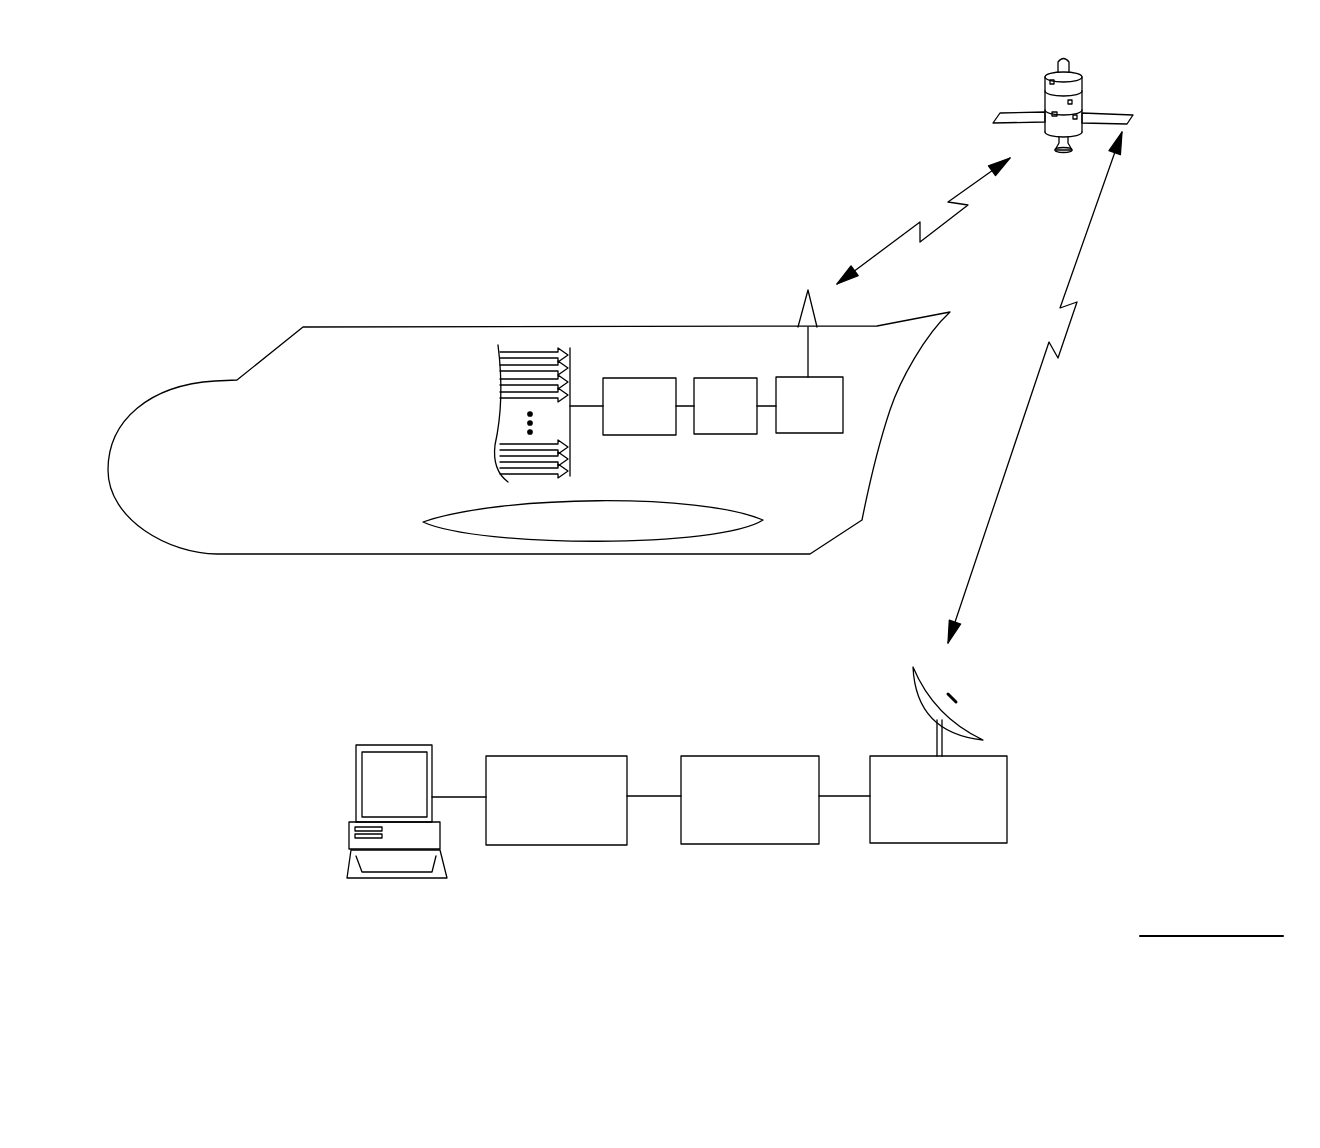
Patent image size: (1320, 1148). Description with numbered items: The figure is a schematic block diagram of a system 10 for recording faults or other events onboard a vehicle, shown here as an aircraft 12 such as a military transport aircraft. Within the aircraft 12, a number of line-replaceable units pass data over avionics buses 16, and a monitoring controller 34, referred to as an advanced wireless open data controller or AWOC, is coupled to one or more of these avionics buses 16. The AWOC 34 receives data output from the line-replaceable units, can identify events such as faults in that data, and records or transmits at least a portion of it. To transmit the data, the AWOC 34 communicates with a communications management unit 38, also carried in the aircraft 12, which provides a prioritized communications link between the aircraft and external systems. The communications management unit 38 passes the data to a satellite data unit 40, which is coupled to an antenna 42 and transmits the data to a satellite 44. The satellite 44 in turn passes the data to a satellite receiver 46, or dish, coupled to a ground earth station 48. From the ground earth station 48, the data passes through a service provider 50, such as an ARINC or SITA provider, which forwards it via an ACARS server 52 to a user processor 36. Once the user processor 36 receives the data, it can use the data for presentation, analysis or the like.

The system 10 is at (530, 223).
The aircraft 12 is at (270, 353).
The avionics buses 16 is at (535, 340).
The monitoring controller (AWOC) 34 is at (640, 378).
The communications management unit (CMU) 38 is at (724, 378).
The satellite data unit (SDU) 40 is at (820, 434).
The antenna 42 is at (800, 297).
The satellite 44 is at (1023, 113).
The satellite receiver 46 is at (977, 723).
The ground earth station (GES) 48 is at (890, 756).
The service provider 50 is at (750, 756).
The ACARS server 52 is at (555, 755).
The user processor 36 is at (395, 745).